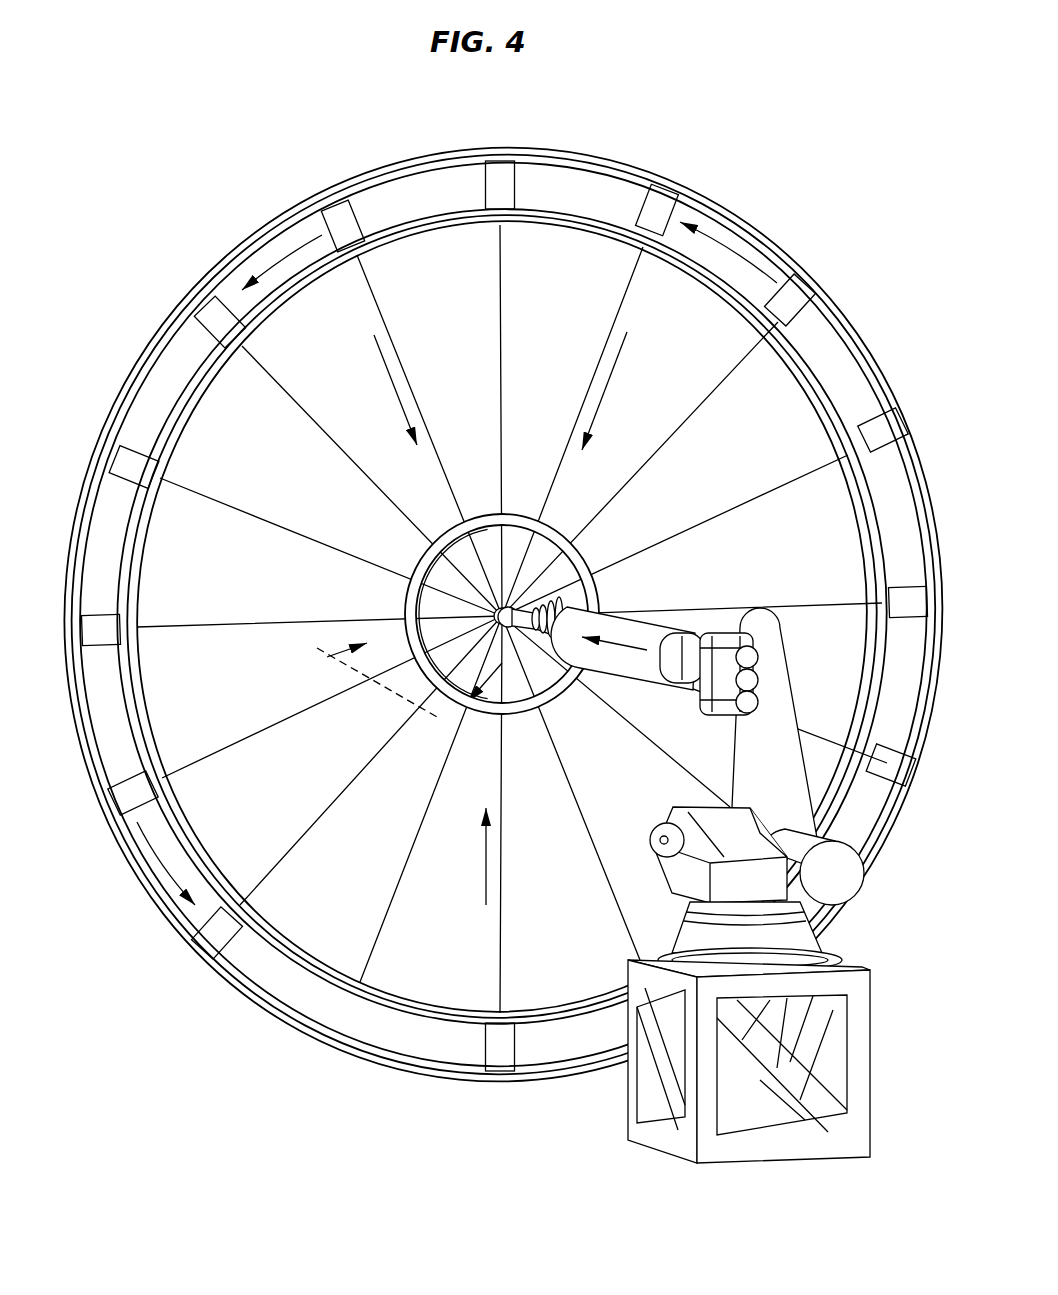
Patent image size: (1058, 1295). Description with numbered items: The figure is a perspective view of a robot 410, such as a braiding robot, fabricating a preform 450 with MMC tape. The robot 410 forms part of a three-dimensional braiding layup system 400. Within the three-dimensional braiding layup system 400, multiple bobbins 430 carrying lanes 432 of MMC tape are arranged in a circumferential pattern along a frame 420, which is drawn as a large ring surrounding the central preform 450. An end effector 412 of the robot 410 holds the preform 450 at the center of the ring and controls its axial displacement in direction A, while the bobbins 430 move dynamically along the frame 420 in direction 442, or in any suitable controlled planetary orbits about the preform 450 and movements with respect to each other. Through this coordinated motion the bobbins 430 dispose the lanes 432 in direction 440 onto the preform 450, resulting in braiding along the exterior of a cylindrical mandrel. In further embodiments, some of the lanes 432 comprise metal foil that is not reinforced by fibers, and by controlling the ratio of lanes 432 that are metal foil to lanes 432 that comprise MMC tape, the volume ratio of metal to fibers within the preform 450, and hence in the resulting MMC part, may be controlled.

The three-dimensional braiding layup system 400 is at (127, 163).
The robot 410 is at (793, 940).
The end effector 412 is at (588, 583).
The frame 420 is at (880, 355).
The bobbins 430 is at (870, 433).
The lanes 432 is at (812, 594).
The direction 440 is at (387, 371).
The direction 442 is at (275, 262).
The preform 450 is at (504, 708).